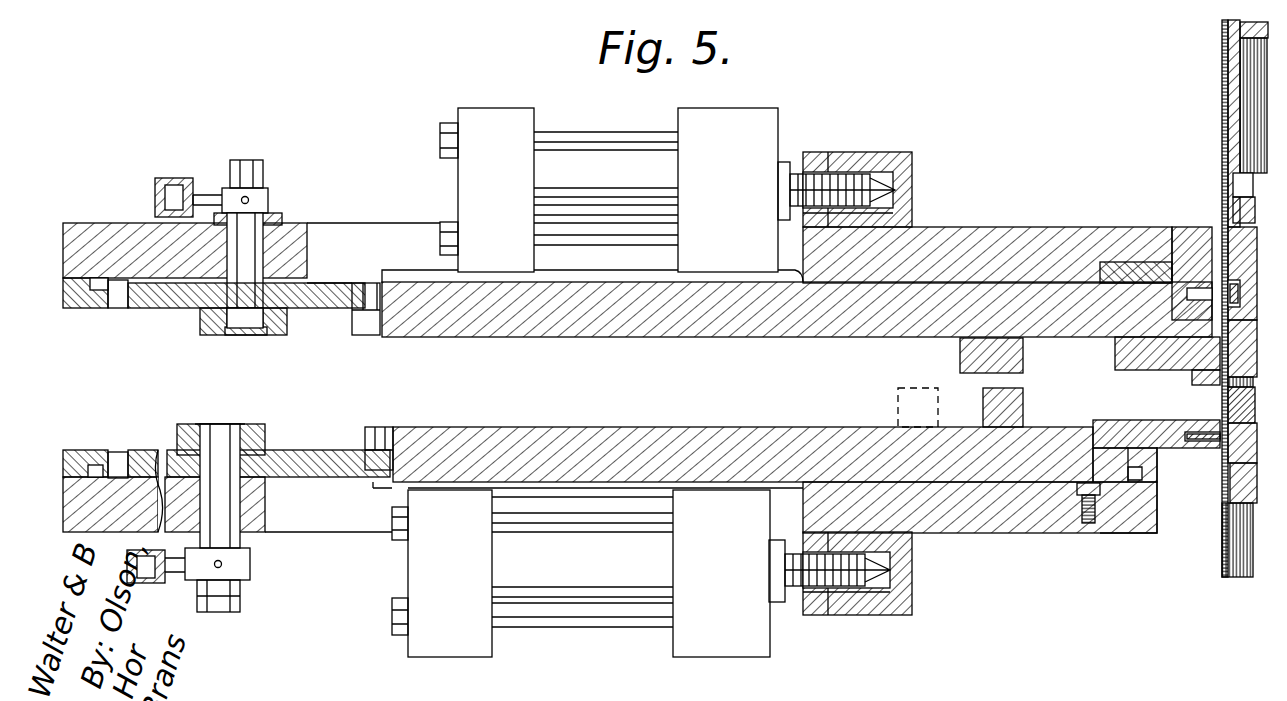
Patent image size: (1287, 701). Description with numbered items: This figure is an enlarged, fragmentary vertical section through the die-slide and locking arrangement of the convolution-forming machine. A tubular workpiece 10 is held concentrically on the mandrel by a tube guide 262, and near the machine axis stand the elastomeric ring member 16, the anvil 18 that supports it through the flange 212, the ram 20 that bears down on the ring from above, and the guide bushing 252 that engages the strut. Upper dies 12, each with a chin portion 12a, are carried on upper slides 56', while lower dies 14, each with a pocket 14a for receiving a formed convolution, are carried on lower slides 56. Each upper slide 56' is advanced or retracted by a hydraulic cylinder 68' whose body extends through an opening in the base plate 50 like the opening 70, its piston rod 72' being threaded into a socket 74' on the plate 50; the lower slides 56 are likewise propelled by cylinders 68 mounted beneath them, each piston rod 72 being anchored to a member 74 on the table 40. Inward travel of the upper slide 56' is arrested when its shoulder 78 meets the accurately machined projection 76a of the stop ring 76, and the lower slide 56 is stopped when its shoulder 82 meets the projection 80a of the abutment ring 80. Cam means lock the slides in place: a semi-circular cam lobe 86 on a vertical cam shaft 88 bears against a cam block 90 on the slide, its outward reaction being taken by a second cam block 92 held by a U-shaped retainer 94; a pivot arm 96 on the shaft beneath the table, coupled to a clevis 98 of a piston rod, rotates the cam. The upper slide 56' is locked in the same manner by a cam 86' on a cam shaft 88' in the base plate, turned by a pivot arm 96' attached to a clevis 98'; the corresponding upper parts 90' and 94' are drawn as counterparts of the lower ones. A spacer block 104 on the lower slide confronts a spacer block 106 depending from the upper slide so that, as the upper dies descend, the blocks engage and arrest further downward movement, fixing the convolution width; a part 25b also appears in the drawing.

The workpiece 10 is at (1222, 578).
The upper die 12 is at (1128, 382).
The chin portion 12a is at (1207, 390).
The lower die 14 is at (1118, 420).
The pocket 14a is at (1205, 448).
The elastomeric ring member 16 is at (1254, 388).
The anvil 18 is at (1257, 448).
The ram 20 is at (1252, 306).
The bearing block 25b is at (1253, 210).
The table 40 is at (265, 520).
The base plate 50 is at (92, 222).
The lower slide 56 is at (775, 435).
The upper slide 56' is at (797, 332).
The hydraulic cylinder 68 is at (581, 593).
The hydraulic cylinder 68' is at (613, 167).
The opening 70 is at (305, 226).
The lower adjusting screw 72 is at (829, 598).
The piston rod 72' is at (836, 160).
The member 74 is at (879, 588).
The socket 74' is at (859, 166).
The stop ring 76 is at (1190, 288).
The projection 76a is at (1215, 288).
The shoulder 78 is at (1112, 262).
The abutment ring 80 is at (1120, 534).
The projection 80a is at (1158, 472).
The shoulder 82 is at (1135, 468).
The cam lobe 86 is at (259, 437).
The cam 86' is at (246, 321).
The cam shaft 88 is at (221, 466).
The cam shaft 88' is at (241, 262).
The cam block 90 is at (382, 429).
The upper spacer block 90' is at (382, 324).
The second cam block 92 is at (115, 310).
The U-shaped retainer 94 is at (86, 442).
The upper clamp block 94' is at (85, 311).
The pivot arm 96 is at (222, 597).
The pivot arm 96' is at (230, 175).
The clevis 98 is at (156, 554).
The clevis 98' is at (172, 178).
The spacer block 104 is at (898, 401).
The spacer block 106 is at (960, 357).
The flange 212 is at (1250, 502).
The guide bushing 252 is at (1228, 34).
The tube guide 262 is at (1228, 60).